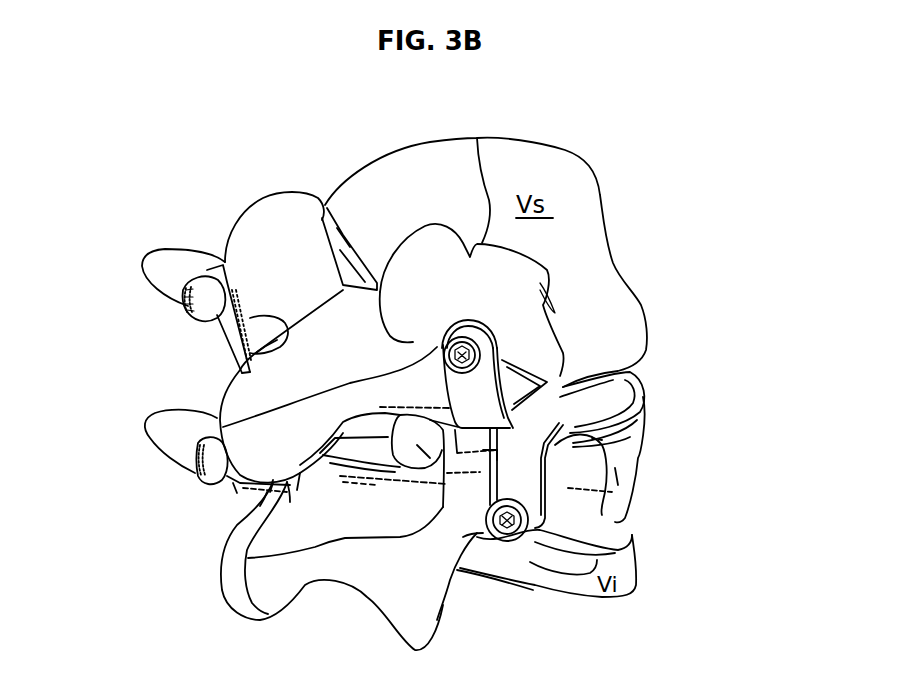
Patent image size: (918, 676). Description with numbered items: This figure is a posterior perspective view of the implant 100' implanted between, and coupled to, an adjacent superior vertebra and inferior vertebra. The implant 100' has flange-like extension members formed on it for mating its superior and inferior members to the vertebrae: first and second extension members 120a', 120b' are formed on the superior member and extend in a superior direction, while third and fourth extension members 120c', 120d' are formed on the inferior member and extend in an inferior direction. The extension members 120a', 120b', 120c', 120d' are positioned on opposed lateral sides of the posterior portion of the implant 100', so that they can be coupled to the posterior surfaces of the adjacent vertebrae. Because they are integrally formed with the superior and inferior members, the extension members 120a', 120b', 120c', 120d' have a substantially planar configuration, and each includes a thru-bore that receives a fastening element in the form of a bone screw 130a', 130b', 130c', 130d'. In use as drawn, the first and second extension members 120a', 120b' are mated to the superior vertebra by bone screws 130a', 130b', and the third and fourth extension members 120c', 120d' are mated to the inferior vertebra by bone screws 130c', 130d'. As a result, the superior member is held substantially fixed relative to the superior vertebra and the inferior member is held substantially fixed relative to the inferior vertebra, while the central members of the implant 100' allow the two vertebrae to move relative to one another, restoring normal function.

The implant 100' is at (631, 395).
The first extension member 120a' is at (157, 330).
The second extension member 120b' is at (600, 368).
The third extension member 120c' is at (176, 512).
The fourth extension member 120d' is at (626, 475).
The bone screw 130a' is at (142, 320).
The bone screw 130b' is at (613, 311).
The bone screw 130c' is at (132, 458).
The bone screw 130d' is at (632, 520).